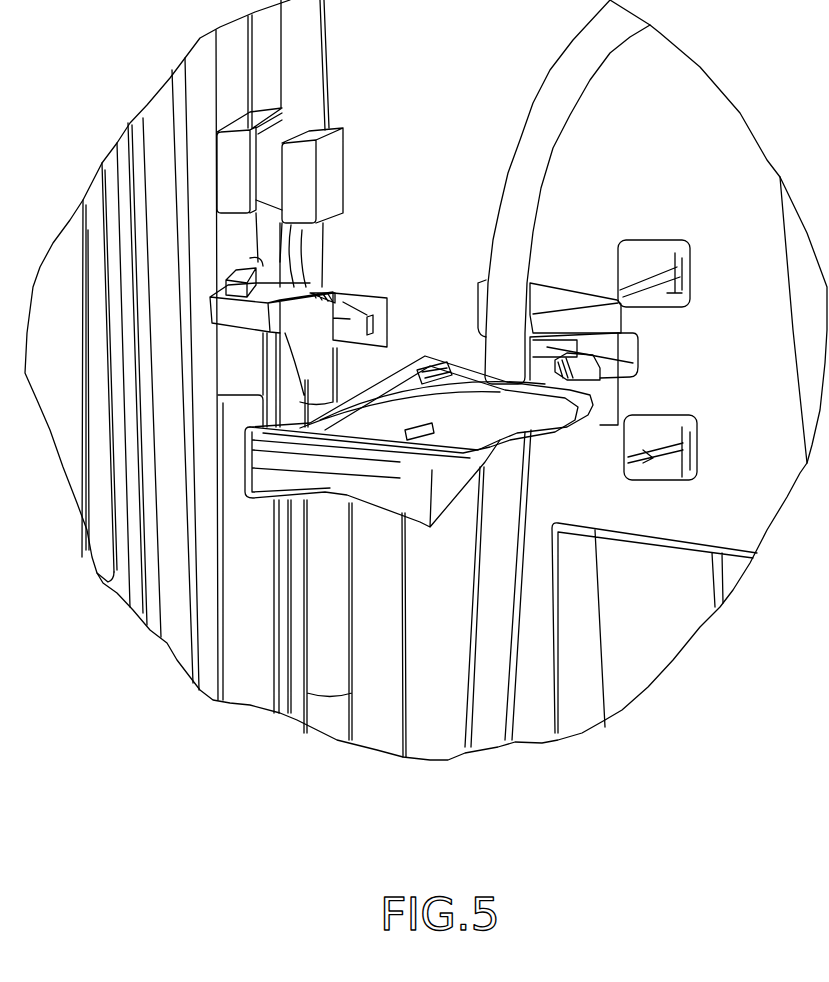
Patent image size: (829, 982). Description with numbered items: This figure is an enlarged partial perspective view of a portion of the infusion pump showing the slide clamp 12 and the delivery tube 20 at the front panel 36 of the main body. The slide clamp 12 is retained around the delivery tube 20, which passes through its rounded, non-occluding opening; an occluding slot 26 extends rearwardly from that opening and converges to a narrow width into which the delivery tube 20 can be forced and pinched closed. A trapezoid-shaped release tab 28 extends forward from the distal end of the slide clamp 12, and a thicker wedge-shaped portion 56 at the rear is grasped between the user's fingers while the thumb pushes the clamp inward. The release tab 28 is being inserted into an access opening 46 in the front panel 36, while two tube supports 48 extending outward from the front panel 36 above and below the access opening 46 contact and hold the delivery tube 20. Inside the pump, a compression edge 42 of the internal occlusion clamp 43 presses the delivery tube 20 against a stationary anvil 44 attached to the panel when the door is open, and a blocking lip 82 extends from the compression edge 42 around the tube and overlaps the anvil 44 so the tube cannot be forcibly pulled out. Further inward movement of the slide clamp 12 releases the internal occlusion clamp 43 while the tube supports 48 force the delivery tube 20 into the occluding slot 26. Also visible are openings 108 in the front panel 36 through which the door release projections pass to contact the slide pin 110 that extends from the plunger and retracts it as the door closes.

The slide clamp 12 is at (432, 353).
The delivery tube 20 is at (310, 48).
The occluding slot 26 is at (417, 377).
The release tab 28 is at (600, 383).
The front panel 36 is at (498, 31).
The compression edge 42 is at (310, 285).
The internal occlusion clamp 43 is at (350, 293).
The anvil 44 is at (255, 280).
The access opening 46 is at (643, 360).
The tube supports 48 is at (565, 283).
The wedge-shaped portion 56 is at (380, 483).
The blocking lip 82 is at (220, 327).
The openings 108 is at (633, 255).
The slide pin 110 is at (682, 267).